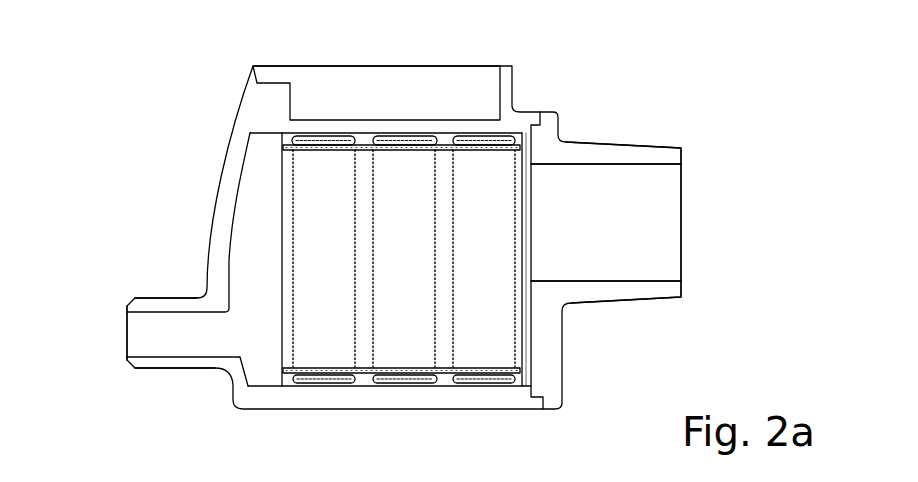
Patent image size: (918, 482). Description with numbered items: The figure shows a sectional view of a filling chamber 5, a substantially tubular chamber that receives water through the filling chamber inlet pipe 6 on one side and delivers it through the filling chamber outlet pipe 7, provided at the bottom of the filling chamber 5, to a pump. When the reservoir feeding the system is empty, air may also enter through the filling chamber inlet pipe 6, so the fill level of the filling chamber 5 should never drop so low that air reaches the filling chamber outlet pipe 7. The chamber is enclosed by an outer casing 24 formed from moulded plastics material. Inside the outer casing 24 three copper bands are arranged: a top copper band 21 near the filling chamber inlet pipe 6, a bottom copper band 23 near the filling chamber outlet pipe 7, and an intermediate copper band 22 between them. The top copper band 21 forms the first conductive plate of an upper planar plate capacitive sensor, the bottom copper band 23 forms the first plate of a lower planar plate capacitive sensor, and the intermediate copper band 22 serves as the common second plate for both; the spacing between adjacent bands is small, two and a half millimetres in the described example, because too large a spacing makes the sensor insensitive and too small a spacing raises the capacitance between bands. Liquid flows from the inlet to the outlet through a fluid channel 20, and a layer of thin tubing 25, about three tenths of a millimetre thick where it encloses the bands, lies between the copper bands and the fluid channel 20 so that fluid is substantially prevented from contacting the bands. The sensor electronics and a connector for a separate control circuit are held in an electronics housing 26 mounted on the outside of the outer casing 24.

The filling chamber 5 is at (668, 120).
The filling chamber inlet pipe 6 is at (688, 197).
The filling chamber outlet pipe 7 is at (95, 328).
The fluid channel 20 is at (521, 326).
The top copper band 21 is at (485, 379).
The intermediate copper band 22 is at (407, 383).
The bottom copper band 23 is at (323, 383).
The outer casing 24 is at (250, 112).
The thin tubing 25 is at (283, 150).
The electronics housing 26 is at (398, 62).